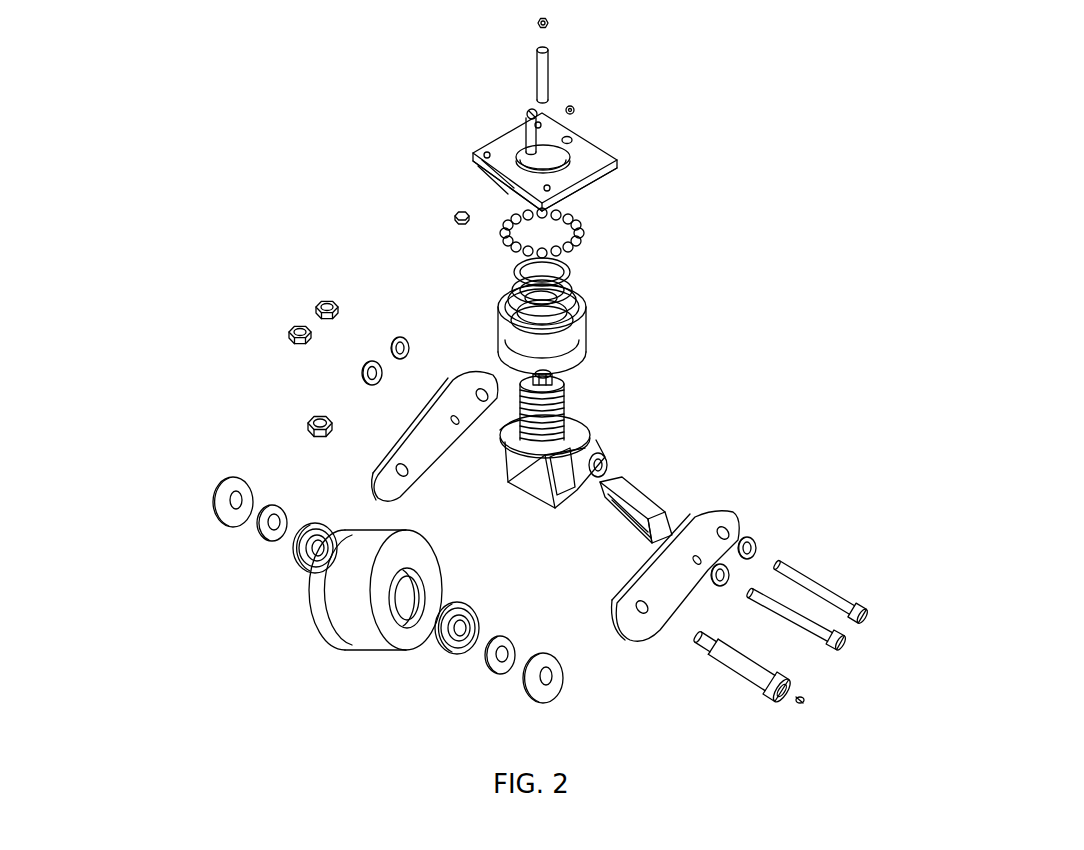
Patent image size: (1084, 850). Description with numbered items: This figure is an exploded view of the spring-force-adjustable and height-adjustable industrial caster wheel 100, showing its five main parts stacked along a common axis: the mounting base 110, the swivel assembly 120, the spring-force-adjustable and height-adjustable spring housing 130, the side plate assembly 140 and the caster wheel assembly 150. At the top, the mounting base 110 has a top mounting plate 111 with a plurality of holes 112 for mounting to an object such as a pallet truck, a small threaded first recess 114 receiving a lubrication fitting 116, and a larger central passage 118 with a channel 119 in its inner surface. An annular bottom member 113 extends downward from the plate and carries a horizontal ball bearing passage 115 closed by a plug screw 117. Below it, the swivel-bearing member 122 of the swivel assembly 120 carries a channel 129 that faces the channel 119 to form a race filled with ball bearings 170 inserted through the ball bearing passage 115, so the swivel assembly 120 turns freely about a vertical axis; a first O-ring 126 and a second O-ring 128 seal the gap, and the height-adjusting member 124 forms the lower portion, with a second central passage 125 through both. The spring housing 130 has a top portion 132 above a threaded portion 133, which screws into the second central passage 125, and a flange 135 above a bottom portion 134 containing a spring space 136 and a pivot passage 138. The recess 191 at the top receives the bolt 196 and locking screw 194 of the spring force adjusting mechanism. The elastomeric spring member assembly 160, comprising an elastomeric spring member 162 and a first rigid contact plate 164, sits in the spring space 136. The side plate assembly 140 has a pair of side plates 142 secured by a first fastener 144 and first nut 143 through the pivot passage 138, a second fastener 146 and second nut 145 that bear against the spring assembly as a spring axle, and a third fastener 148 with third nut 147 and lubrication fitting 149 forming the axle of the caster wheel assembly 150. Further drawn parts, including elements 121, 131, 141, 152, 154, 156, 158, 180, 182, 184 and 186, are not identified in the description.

The spring-force-adjustable and height-adjustable industrial caster wheel 100 is at (190, 192).
The mounting base 110 is at (382, 152).
The top mounting plate 111 is at (592, 182).
The holes 112 is at (488, 156).
The annular bottom member 113 is at (573, 198).
The first recess 114 is at (568, 142).
The ball bearing passage 115 is at (503, 191).
The lubrication fitting 116 is at (575, 112).
The plug screw 117 is at (458, 212).
The central passage 118 is at (523, 155).
The channel 119 is at (565, 157).
The swivel assembly 120 is at (405, 257).
The bearing race 121 is at (530, 302).
The swivel-bearing member 122 is at (537, 281).
The height-adjusting member 124 is at (572, 347).
The second central passage 125 is at (533, 300).
The first O-ring 126 is at (527, 328).
The second O-ring 128 is at (512, 272).
The channel 129 is at (548, 315).
The spring-force-adjustable and height-adjustable spring housing 130 is at (733, 340).
The lock nut 131 is at (547, 385).
The top portion 132 is at (547, 392).
The threaded portion 133 is at (548, 432).
The bottom portion 134 is at (585, 450).
The flange 135 is at (557, 452).
The spring space 136 is at (570, 482).
The pivot passage 138 is at (598, 465).
The side plate assembly 140 is at (745, 512).
The washer 141 is at (392, 347).
The side plates 142 is at (425, 433).
The first nut 143 is at (322, 305).
The first fastener 144 is at (862, 612).
The second nut 145 is at (297, 330).
The second fastener 146 is at (833, 637).
The third nut 147 is at (312, 418).
The third fastener 148 is at (782, 677).
The lubrication fitting 149 is at (805, 702).
The caster wheel assembly 150 is at (175, 477).
The wheel 152 is at (348, 617).
The bearing 154 is at (295, 557).
The spacer washer 156 is at (257, 537).
The outer washer 158 is at (233, 518).
The elastomeric spring member assembly 160 is at (665, 500).
The elastomeric spring member 162 is at (623, 512).
The first rigid contact plate 164 is at (640, 537).
The ball bearings 170 is at (572, 232).
The fastener assembly 180 is at (472, 115).
The kingpin shoulder 182 is at (527, 413).
The sleeve 184 is at (523, 120).
The bolt head 186 is at (527, 114).
The recess 191 is at (545, 375).
The locking screw 194 is at (548, 72).
The bolt 196 is at (550, 23).